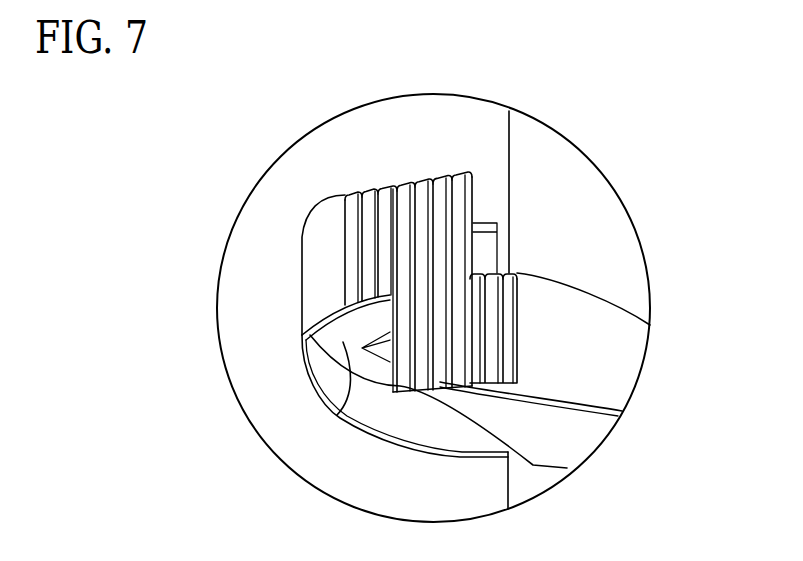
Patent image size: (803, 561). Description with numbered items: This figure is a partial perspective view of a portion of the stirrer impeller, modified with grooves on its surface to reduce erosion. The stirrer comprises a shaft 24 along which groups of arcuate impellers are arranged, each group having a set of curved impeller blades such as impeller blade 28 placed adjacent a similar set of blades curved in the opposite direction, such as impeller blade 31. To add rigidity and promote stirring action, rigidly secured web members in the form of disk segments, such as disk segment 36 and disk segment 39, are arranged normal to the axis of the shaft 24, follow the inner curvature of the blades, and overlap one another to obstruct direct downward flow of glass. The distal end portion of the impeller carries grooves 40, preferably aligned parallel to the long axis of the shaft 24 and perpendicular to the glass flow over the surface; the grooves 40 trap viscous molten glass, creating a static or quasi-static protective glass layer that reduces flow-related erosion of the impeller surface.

The shaft 24 is at (508, 144).
The impeller blade 28 is at (547, 273).
The impeller blade 31 is at (329, 200).
The disk segment 36 is at (578, 430).
The disk segment 39 is at (337, 415).
The grooves 40 is at (453, 175).